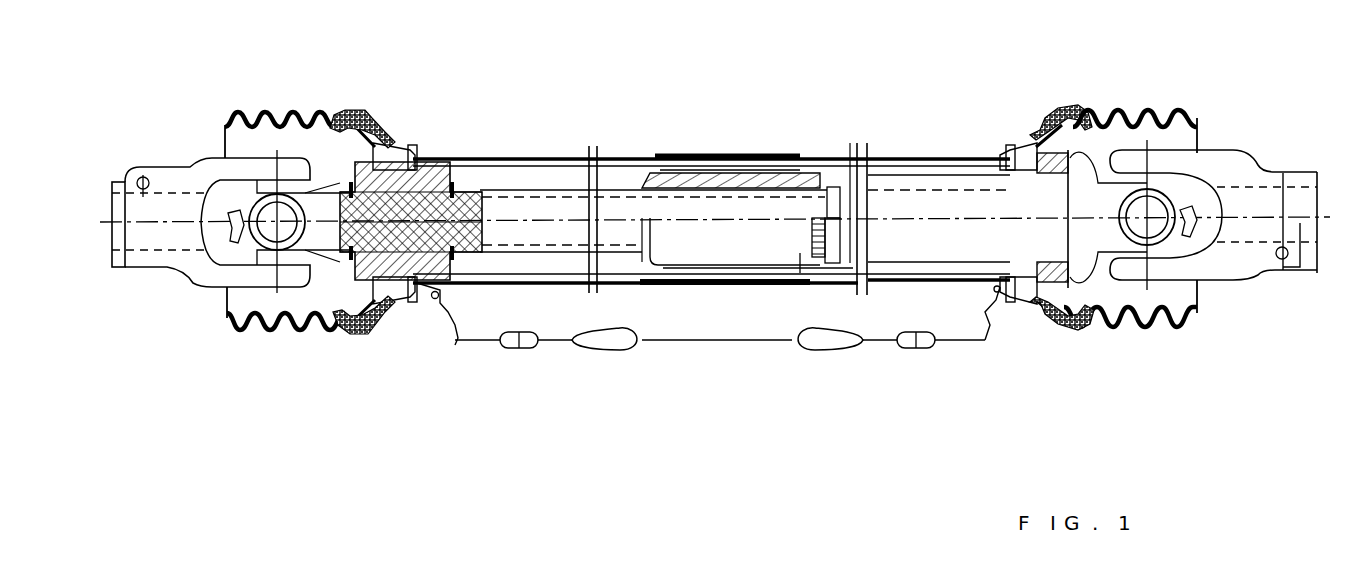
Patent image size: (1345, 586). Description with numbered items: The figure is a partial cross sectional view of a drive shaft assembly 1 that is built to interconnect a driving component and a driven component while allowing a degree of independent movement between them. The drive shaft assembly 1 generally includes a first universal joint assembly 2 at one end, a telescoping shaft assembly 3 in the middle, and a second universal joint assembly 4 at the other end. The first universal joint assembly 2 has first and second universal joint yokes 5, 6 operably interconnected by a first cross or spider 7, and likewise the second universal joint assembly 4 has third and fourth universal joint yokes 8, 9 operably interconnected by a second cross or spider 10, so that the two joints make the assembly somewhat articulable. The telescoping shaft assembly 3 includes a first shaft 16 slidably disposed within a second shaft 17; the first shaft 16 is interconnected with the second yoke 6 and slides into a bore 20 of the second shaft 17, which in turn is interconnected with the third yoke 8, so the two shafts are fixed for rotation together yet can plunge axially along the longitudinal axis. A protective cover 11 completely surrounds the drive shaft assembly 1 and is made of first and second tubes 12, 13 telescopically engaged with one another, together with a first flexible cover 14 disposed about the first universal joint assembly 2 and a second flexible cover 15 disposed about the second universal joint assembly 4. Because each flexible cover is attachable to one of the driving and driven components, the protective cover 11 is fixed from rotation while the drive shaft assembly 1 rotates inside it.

The drive shaft assembly 1 is at (814, 90).
The first universal joint assembly 2 is at (201, 157).
The telescoping shaft assembly 3 is at (840, 158).
The second universal joint assembly 4 is at (1217, 152).
The first universal joint yoke 5 is at (134, 163).
The second universal joint yoke 6 is at (305, 322).
The first cross or spider 7 is at (238, 255).
The third universal joint yoke 8 is at (1052, 112).
The fourth universal joint yoke 9 is at (1138, 165).
The second cross or spider 10 is at (1155, 320).
The protective cover 11 is at (506, 154).
The first tube 12 is at (558, 158).
The second tube 13 is at (940, 160).
The first flexible cover 14 is at (268, 115).
The second flexible cover 15 is at (1185, 108).
The first shaft 16 is at (495, 190).
The second shaft 17 is at (986, 160).
The bore 20 is at (878, 188).